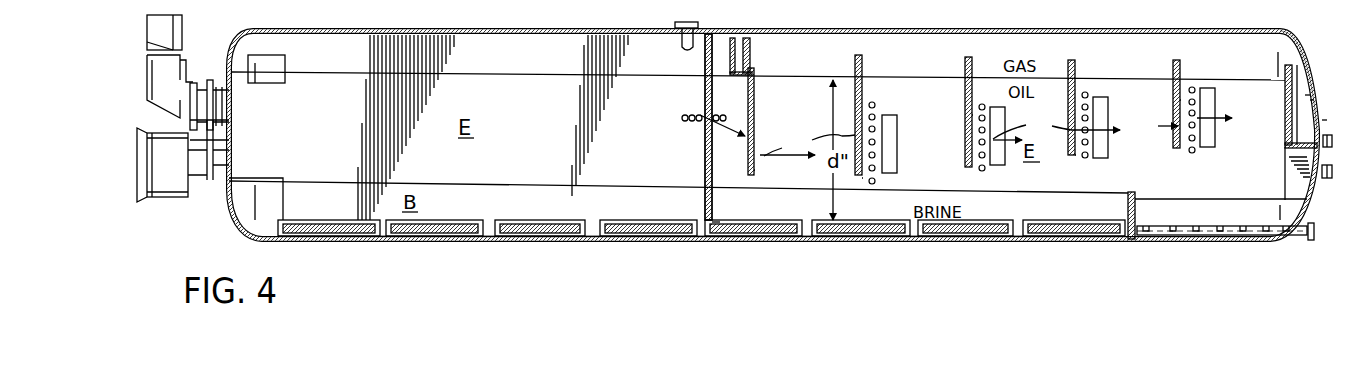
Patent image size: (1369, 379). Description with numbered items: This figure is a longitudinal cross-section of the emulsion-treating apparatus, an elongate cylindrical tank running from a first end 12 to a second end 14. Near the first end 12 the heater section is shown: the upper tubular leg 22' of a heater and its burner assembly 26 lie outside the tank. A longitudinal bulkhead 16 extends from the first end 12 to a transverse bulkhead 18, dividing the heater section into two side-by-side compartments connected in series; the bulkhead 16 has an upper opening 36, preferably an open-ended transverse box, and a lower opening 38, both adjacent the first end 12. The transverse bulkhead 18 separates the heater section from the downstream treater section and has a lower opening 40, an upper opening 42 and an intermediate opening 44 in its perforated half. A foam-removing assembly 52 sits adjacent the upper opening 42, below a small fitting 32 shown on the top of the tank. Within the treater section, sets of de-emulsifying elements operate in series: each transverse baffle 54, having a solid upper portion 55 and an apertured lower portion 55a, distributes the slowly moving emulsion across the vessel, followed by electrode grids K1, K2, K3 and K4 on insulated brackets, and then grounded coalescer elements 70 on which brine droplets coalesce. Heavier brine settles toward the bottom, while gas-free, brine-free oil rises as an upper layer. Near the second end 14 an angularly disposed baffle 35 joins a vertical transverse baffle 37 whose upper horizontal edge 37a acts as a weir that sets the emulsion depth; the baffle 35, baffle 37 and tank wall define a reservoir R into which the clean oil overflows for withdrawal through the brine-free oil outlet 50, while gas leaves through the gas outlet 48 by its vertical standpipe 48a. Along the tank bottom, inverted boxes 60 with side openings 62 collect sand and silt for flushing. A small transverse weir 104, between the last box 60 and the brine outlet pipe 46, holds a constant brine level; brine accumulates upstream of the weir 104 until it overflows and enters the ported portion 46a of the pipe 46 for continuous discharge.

The first end 12 is at (250, 29).
The second end 14 is at (1303, 48).
The longitudinal bulkhead 16 is at (533, 117).
The transverse bulkhead 18 is at (712, 168).
The upper tubular leg 22' is at (188, 72).
The burner assembly 26 is at (167, 198).
The gas outlet fitting 32 is at (682, 43).
The angularly disposed baffle 35 is at (1293, 172).
The upper opening 36 is at (270, 62).
The vertical transverse baffle 37 is at (1285, 105).
The upper horizontal edge 37a is at (1259, 64).
The lower opening 38 is at (272, 193).
The lower opening 40 is at (713, 220).
The upper opening 42 is at (713, 43).
The intermediate opening 44 is at (700, 115).
The brine outlet pipe 46 is at (1315, 233).
The perforated brine collection pipe 46a is at (1242, 237).
The gas outlet 48 is at (1327, 120).
The vertical standpipe 48a is at (1307, 100).
The brine-free oil outlet 50 is at (1330, 177).
The foam-removing assembly 52 is at (752, 47).
The transverse baffle 54 is at (996, 134).
The solid upper portion 55 is at (755, 97).
The apertured lower portion 55a is at (755, 170).
The inverted boxes 60 is at (339, 220).
The openings 62 is at (322, 237).
The coalescer elements 70 is at (900, 170).
The transverse weir 104 is at (1137, 205).
The electrode grid K1 is at (872, 103).
The electrode grid K2 is at (982, 105).
The electrode grid K3 is at (1085, 93).
The electrode grid K4 is at (1192, 88).
The reservoir R is at (1313, 100).